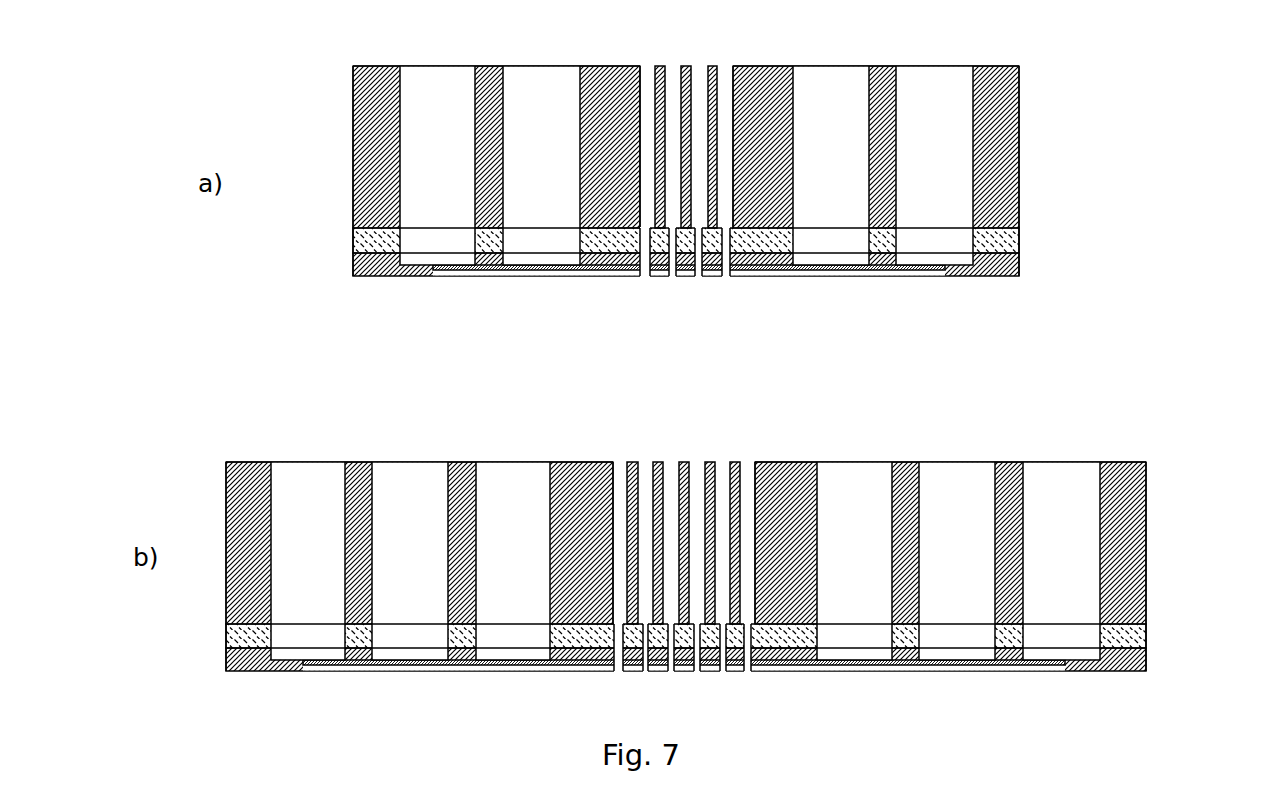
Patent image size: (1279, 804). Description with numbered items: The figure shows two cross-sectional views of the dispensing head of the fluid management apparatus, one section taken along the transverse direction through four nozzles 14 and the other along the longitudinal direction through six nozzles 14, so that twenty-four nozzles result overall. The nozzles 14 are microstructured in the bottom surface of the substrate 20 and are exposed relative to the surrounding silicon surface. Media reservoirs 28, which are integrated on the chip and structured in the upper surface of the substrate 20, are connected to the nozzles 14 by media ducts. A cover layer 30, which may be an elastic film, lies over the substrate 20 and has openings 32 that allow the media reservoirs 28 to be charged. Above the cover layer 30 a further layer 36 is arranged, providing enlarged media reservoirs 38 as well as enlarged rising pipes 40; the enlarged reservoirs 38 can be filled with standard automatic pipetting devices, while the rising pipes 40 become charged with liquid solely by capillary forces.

In FIG. 7a, the nozzle openings 14 is at (645, 278).
In FIG. 7b, the nozzle openings 14 is at (618, 672).
In FIG. 7a, the substrate 20 is at (1020, 273).
In FIG. 7b, the substrate 20 is at (1148, 660).
In FIG. 7a, the media reservoirs 28 is at (933, 262).
In FIG. 7b, the media reservoirs 28 is at (1080, 668).
In FIG. 7a, the cover layer 30 is at (1010, 238).
In FIG. 7b, the cover layer 30 is at (1148, 632).
In FIG. 7a, the openings 32 is at (905, 238).
In FIG. 7b, the openings 32 is at (1040, 635).
In FIG. 7a, the further layer 36 is at (1020, 142).
In FIG. 7b, the further layer 36 is at (1148, 535).
In FIG. 7a, the enlarged media reservoirs 38 is at (830, 85).
In FIG. 7b, the enlarged media reservoirs 38 is at (1057, 475).
In FIG. 7a, the rising pipes 40 is at (723, 62).
In FIG. 7b, the rising pipes 40 is at (746, 460).